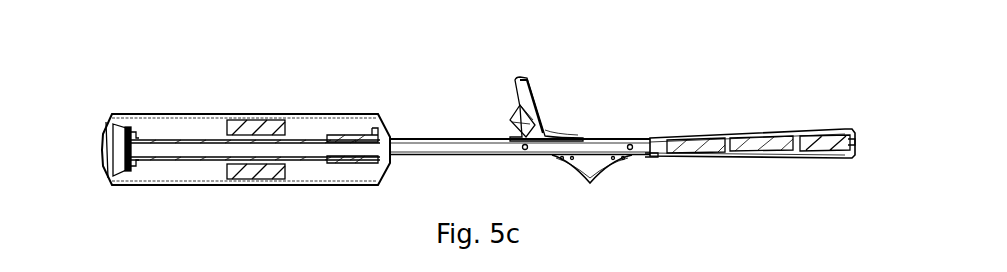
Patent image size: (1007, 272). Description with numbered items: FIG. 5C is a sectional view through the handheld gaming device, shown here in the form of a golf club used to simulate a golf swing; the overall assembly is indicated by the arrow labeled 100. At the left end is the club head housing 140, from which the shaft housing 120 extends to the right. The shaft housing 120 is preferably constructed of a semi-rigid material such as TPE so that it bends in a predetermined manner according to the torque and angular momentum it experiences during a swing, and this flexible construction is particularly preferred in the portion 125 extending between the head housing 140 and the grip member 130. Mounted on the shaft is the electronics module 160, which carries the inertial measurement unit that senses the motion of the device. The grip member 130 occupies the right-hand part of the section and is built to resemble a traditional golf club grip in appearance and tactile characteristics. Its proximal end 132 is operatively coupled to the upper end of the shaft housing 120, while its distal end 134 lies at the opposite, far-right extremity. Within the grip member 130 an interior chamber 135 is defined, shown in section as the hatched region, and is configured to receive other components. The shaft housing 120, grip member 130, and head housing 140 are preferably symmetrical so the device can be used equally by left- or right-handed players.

The surgical instrument 100 is at (560, 86).
The shaft housing 120 is at (445, 168).
The portion 125 is at (443, 139).
The grip member 130 is at (758, 136).
The proximal end 132 is at (662, 156).
The distal end 134 is at (855, 141).
The interior chamber 135 is at (744, 150).
The club head housing 140 is at (338, 114).
The electronics module 160 is at (510, 125).